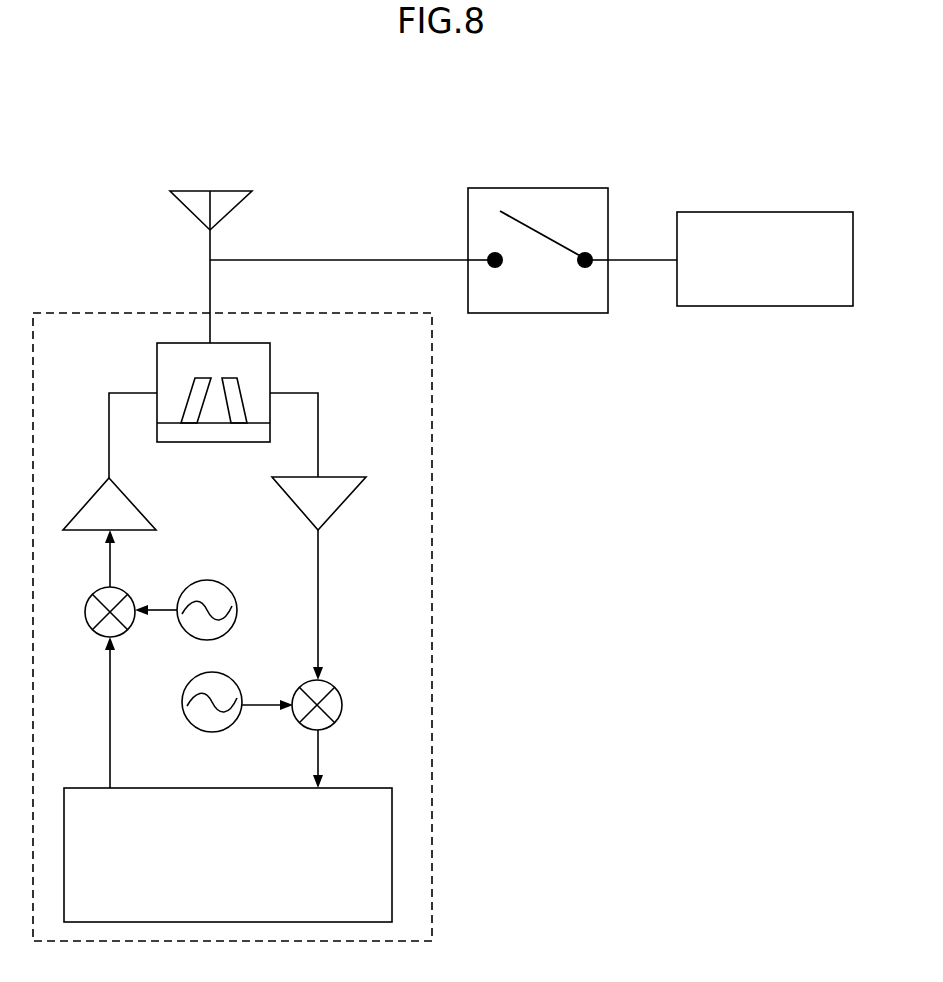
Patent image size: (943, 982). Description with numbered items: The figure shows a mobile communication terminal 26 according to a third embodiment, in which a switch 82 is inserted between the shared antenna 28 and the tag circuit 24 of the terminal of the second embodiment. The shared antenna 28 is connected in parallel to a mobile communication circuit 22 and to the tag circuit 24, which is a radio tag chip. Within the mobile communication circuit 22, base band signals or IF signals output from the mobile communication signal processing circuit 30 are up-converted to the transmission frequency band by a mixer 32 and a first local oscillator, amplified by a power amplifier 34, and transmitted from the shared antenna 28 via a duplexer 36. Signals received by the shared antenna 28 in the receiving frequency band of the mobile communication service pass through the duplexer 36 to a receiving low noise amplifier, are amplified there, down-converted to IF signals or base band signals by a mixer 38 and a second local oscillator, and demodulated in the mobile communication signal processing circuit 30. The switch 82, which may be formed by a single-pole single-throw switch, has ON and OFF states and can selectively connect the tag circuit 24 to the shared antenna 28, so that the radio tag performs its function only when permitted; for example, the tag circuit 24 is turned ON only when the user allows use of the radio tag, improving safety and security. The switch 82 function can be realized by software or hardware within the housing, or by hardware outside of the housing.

The mobile communication circuit 22 is at (433, 480).
The tag circuit 24 is at (745, 212).
The mobile communication terminal 26 is at (98, 232).
The shared antenna 28 is at (228, 190).
The mobile communication signal processing circuit 30 is at (357, 787).
The mixer 32 is at (132, 592).
The power amplifier 34 is at (130, 498).
The duplexer 36 is at (272, 364).
The mixer 38 is at (340, 693).
The switch 82 is at (554, 188).